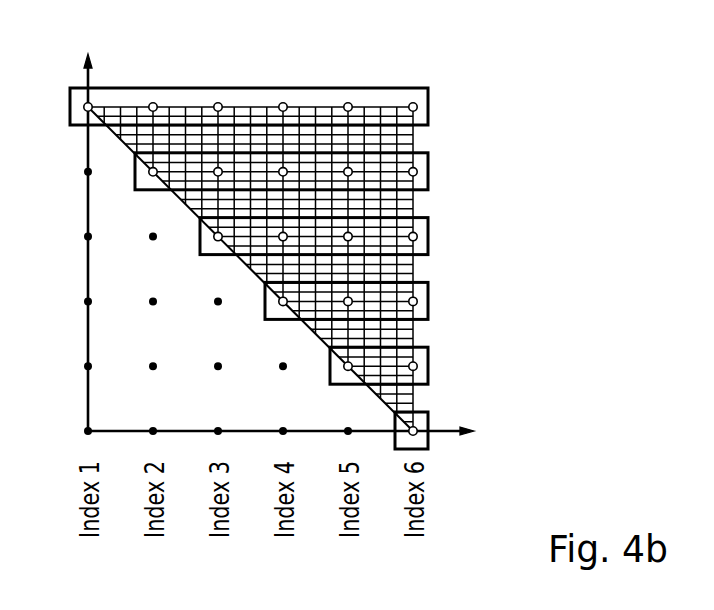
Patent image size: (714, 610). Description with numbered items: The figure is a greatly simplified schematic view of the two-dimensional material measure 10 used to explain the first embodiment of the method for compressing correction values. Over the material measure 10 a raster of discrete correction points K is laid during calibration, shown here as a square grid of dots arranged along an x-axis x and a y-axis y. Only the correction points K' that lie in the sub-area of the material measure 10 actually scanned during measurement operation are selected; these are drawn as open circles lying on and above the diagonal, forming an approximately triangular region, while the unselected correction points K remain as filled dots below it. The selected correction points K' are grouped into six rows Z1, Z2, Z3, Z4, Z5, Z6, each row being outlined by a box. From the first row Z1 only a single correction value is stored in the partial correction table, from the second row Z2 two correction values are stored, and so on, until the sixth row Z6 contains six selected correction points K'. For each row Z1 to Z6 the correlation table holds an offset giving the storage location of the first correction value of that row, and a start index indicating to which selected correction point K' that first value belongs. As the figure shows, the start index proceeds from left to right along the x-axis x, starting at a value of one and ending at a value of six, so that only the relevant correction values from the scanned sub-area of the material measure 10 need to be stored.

The selected correction points K' is at (264, 229).
The correction points K is at (249, 268).
The material measure 10 is at (382, 203).
The x-axis x is at (291, 431).
The y-axis y is at (86, 224).
The first row Z1 is at (229, 431).
The second row Z2 is at (229, 366).
The third row Z3 is at (229, 302).
The fourth row Z4 is at (229, 237).
The fifth row Z5 is at (229, 172).
The sixth row Z6 is at (229, 107).